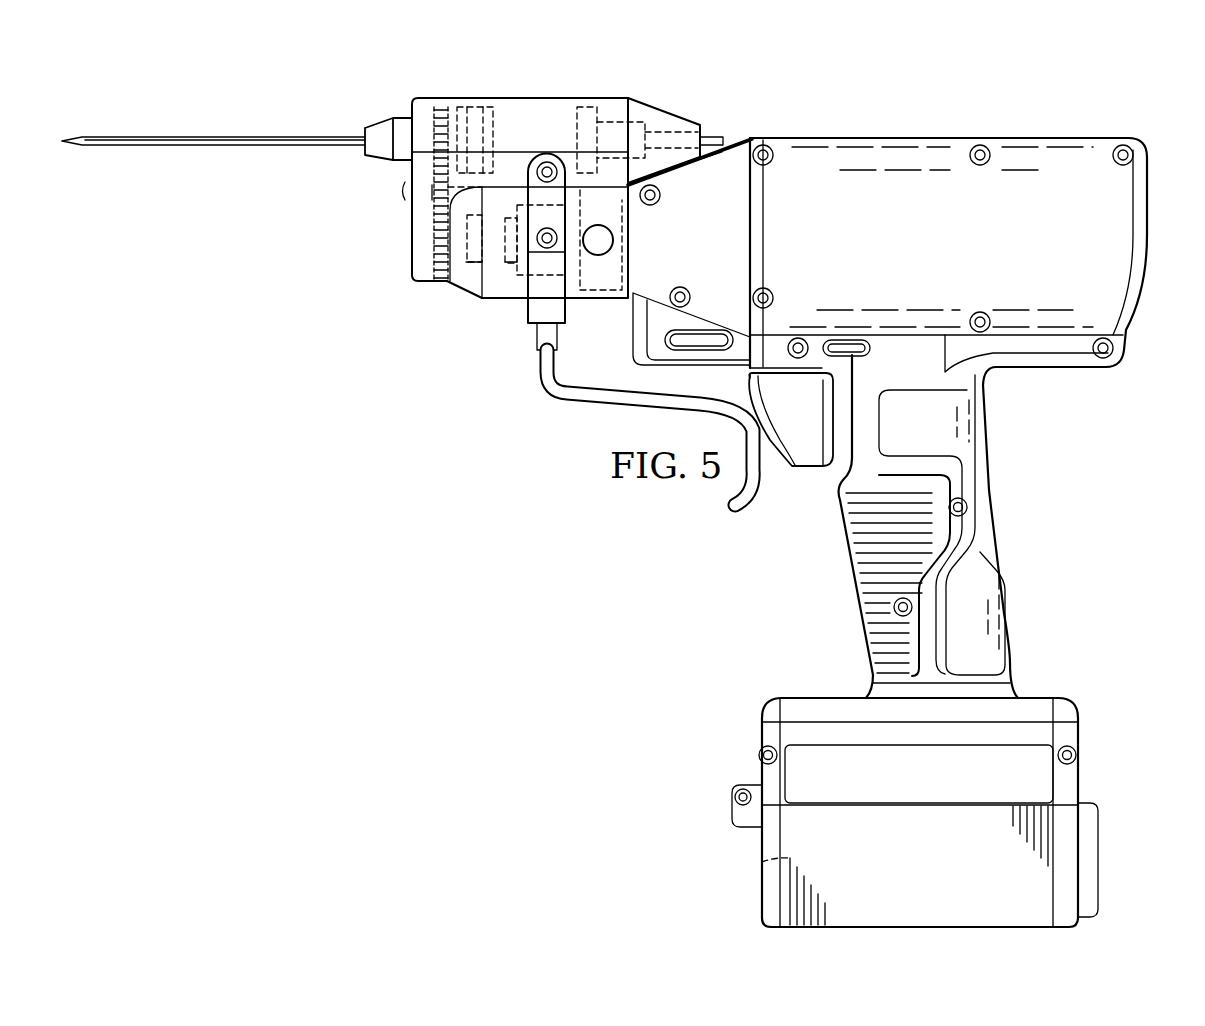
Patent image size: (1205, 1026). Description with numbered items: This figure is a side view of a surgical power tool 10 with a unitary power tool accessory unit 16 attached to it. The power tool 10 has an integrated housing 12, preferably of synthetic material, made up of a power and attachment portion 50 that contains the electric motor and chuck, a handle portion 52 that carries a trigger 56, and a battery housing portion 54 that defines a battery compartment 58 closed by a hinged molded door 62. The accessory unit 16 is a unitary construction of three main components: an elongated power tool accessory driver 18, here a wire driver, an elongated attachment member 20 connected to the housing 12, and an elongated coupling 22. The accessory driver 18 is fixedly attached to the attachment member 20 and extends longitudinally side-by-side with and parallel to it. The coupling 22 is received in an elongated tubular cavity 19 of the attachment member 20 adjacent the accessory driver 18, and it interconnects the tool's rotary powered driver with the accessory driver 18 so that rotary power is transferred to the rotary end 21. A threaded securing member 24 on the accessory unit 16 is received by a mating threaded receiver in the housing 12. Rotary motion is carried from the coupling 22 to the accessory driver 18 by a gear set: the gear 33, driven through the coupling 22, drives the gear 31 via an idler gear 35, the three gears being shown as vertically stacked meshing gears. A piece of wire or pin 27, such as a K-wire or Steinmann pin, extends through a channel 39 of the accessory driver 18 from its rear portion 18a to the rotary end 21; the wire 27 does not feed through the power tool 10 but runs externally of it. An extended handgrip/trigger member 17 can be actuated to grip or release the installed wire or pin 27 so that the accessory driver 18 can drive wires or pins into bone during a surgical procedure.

The surgical power tool 10 is at (855, 104).
The integrated housing 12 is at (910, 137).
The unitary power tool accessory unit 16 is at (528, 77).
The handgrip member 17 is at (750, 462).
The power tool accessory driver 18 is at (600, 97).
The rear portion 18a is at (712, 136).
The cavity 19 is at (472, 272).
The attachment member 20 is at (598, 314).
The rotary end 21 is at (385, 121).
The coupling 22 is at (497, 250).
The threaded securing member 24 is at (613, 246).
The wire or pin 27 is at (222, 136).
The gear 31 is at (440, 105).
The gear 33 is at (443, 283).
The idler gear 35 is at (430, 192).
The channel 39 is at (672, 128).
The power and attachment portion 50 is at (1133, 112).
The handle portion 52 is at (1026, 424).
The battery housing portion 54 is at (1099, 688).
The trigger 56 is at (800, 468).
The battery compartment 58 is at (762, 862).
The hinged molded door 62 is at (1100, 870).